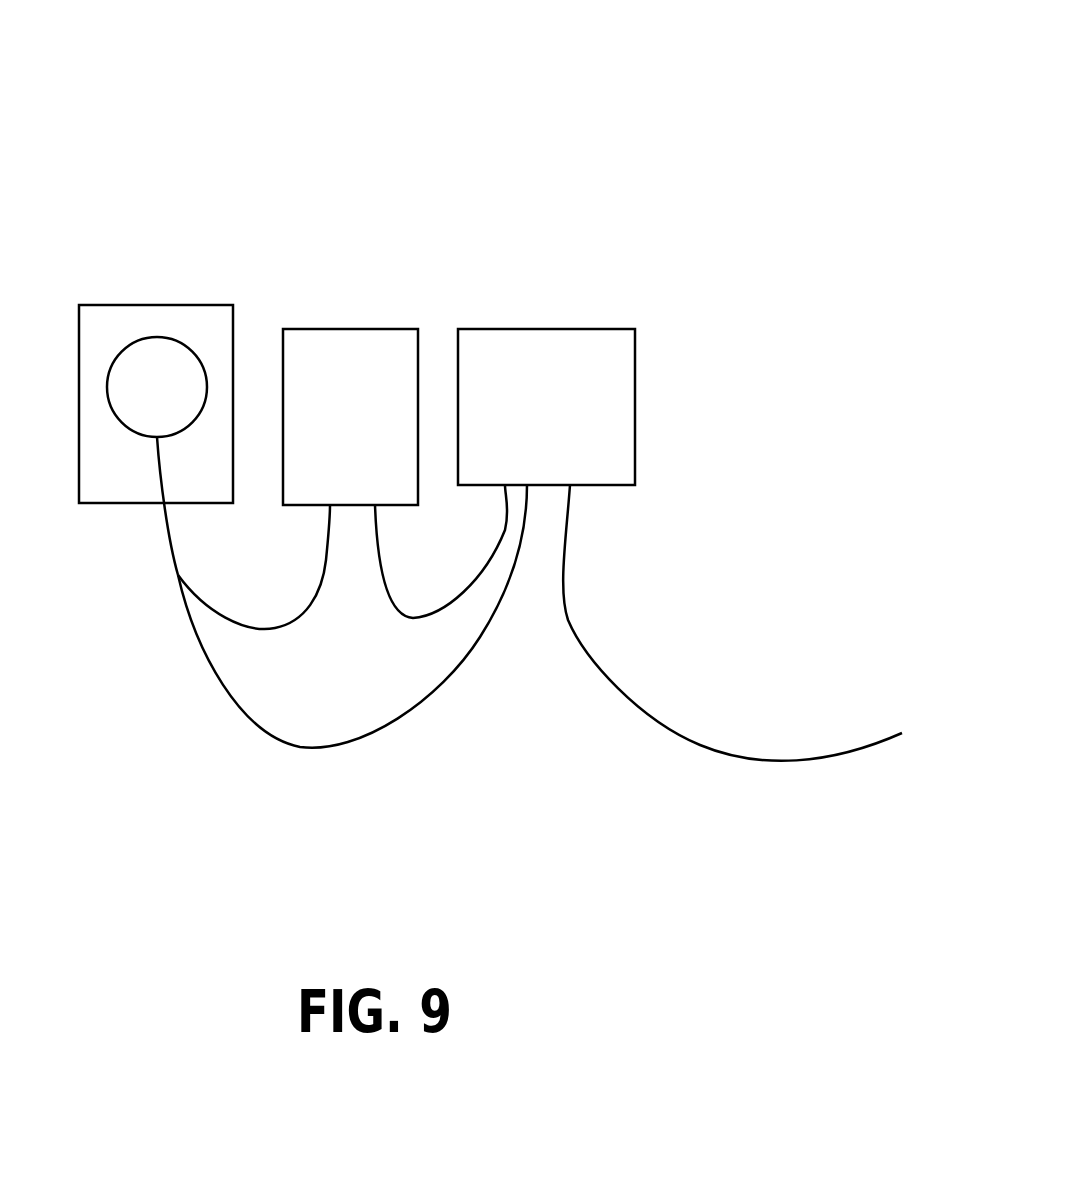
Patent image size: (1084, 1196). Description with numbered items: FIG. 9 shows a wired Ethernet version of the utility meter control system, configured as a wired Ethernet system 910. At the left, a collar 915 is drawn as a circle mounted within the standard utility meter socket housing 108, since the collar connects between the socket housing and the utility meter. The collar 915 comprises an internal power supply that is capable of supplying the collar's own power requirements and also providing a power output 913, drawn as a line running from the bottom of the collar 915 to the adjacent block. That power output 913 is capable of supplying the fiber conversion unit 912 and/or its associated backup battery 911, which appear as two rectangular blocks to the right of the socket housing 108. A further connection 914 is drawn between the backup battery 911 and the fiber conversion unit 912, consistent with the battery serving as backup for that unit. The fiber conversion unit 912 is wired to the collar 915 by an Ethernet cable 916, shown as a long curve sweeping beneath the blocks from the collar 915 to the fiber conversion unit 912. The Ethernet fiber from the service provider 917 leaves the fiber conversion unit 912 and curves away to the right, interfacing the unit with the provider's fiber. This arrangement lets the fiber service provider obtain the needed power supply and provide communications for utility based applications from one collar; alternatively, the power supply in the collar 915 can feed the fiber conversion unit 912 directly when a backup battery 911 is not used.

The wired Ethernet system 910 is at (684, 112).
The utility meter socket housing 108 is at (142, 497).
The collar 915 is at (177, 407).
The backup battery 911 is at (378, 433).
The fiber conversion unit 912 is at (577, 430).
The power output 913 is at (315, 595).
The cable 914 is at (485, 575).
The Ethernet cable 916 is at (360, 738).
The Ethernet fiber from the service provider 917 is at (675, 732).